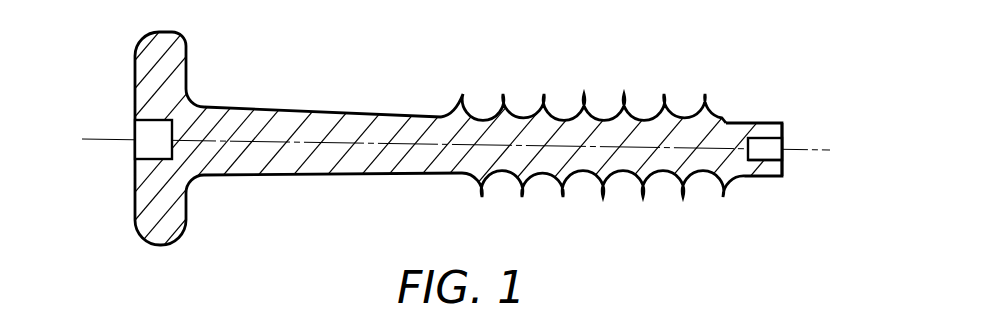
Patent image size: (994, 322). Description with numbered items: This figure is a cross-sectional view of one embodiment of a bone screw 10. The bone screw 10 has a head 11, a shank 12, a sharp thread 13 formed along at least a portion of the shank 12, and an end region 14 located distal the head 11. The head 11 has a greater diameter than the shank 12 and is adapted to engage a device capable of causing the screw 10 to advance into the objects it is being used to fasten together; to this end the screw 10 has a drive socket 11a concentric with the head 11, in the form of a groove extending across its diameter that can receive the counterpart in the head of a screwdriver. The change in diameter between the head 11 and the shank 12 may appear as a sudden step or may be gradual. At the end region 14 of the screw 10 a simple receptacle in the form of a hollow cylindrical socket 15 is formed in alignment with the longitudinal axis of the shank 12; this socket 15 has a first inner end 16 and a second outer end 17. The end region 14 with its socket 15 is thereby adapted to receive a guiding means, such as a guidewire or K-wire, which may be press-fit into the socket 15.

The bone screw 10 is at (439, 153).
The head 11 is at (148, 227).
The drive socket 11a is at (143, 146).
The shank 12 is at (387, 166).
The sharp thread 13 is at (462, 95).
The end region 14 is at (767, 115).
The hollow cylindrical socket 15 is at (775, 143).
The first inner end 16 is at (758, 160).
The second outer end 17 is at (787, 158).